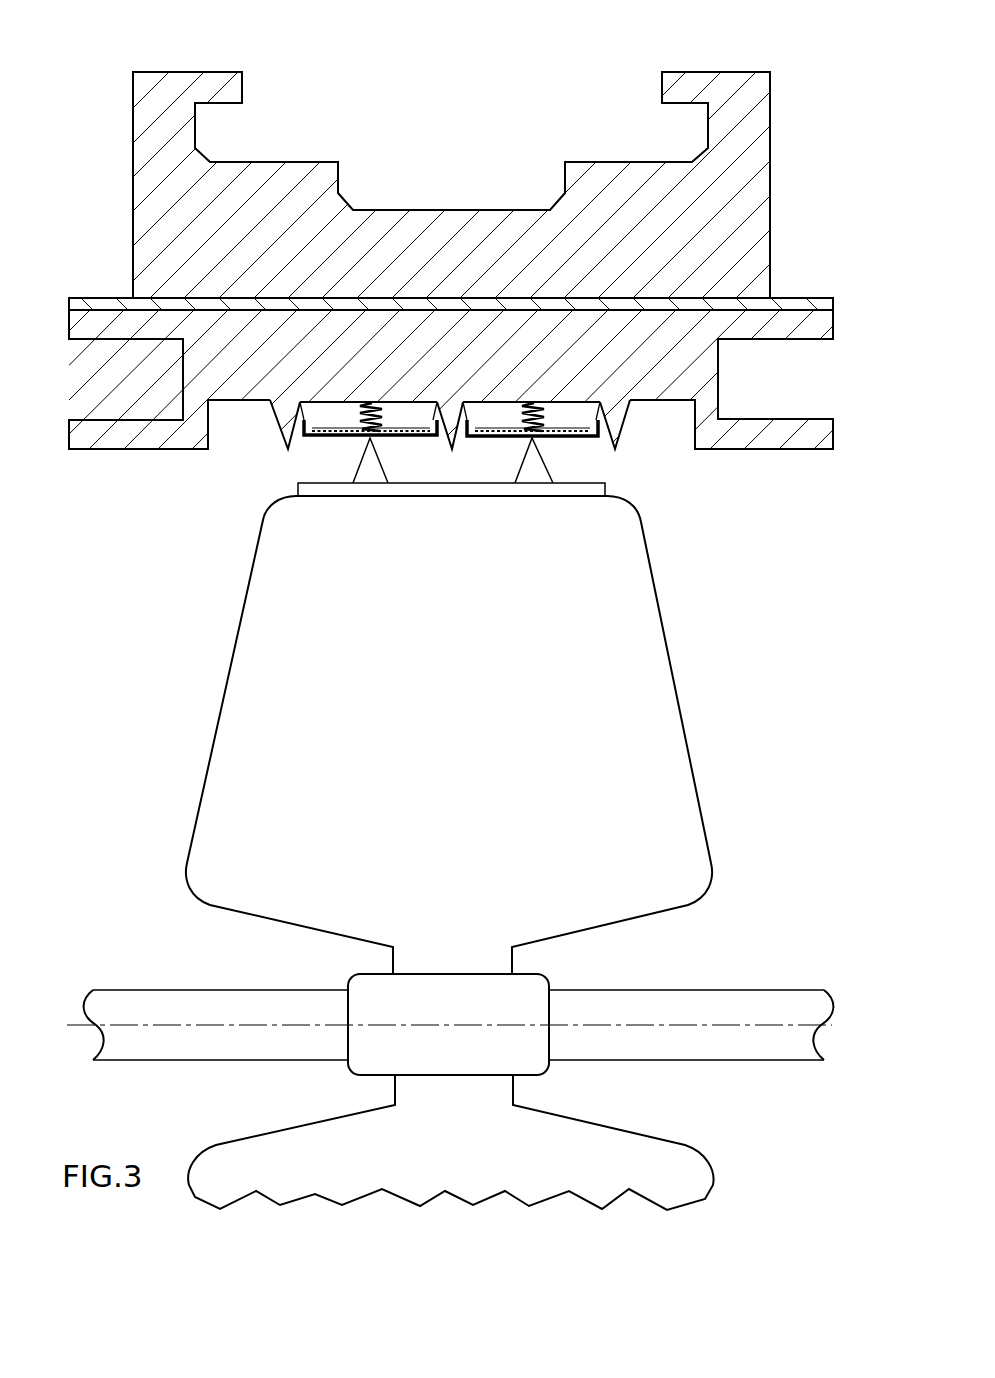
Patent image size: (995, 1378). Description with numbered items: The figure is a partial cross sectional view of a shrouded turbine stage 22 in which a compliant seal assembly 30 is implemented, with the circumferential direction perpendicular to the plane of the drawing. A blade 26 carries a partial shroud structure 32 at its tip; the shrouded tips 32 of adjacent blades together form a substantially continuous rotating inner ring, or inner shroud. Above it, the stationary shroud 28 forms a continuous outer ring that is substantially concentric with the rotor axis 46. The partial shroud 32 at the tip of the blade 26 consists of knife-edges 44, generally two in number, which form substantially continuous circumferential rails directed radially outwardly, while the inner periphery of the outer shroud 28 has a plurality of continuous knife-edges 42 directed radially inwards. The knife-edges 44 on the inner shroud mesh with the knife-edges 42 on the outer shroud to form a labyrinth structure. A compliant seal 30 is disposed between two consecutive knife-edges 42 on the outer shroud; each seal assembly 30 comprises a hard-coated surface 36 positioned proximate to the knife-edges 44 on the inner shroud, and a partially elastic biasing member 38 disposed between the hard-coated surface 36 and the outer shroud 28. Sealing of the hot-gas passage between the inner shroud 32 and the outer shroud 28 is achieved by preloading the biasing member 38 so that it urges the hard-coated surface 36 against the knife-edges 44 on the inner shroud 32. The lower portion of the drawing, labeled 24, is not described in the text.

The shrouded turbine stage 22 is at (497, 269).
The stationary shroud 28 is at (428, 213).
The partial shroud structure 32 is at (612, 487).
The knife-edges 42 is at (276, 403).
The compliant seal assembly 30 is at (326, 413).
The partially elastic biasing member 38 is at (360, 436).
The hard-coated surface 36 is at (567, 437).
The knife-edges 44 is at (406, 485).
The anvil assembly 24 is at (450, 853).
The blade 26 is at (680, 688).
The rotor axis 46 is at (177, 1023).